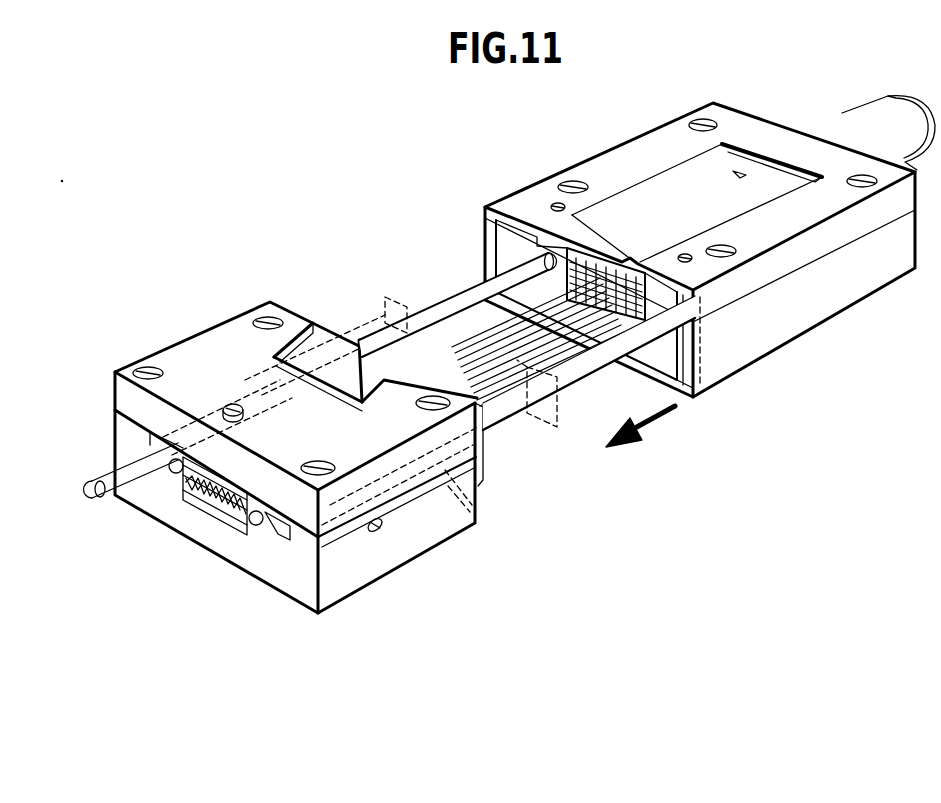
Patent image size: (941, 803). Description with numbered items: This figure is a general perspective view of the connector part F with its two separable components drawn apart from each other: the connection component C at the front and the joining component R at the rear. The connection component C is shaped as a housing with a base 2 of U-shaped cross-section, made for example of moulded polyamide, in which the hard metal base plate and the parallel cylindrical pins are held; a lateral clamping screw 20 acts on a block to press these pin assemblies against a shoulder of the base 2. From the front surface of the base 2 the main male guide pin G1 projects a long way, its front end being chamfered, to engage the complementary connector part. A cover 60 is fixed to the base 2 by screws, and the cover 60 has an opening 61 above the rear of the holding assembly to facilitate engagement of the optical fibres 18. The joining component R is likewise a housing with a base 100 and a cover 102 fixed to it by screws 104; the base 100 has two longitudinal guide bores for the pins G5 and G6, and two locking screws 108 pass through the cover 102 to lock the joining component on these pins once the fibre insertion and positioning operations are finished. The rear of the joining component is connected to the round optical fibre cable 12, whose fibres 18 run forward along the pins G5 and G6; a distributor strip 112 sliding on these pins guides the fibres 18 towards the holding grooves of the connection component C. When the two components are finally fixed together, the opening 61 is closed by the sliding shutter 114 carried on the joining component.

The base 2 is at (342, 575).
The round optical fibre cable 12 is at (848, 132).
The optical fibres 18 is at (560, 338).
The lateral clamping screw 20 is at (383, 531).
The cover 60 is at (390, 472).
The opening 61 is at (352, 398).
The base of the joining component 100 is at (800, 307).
The cover of the joining component 102 is at (693, 200).
The screws 104 is at (702, 120).
The locking screws 108 is at (556, 203).
The distributor strip 112 is at (385, 300).
The sliding shutter 114 is at (683, 182).
The connection component C is at (293, 447).
The connector part F is at (496, 347).
The main male guide pin G1 is at (115, 522).
The guide pin G5 is at (460, 292).
The auxiliary reference pin G6 is at (500, 413).
The receptacle R is at (695, 226).